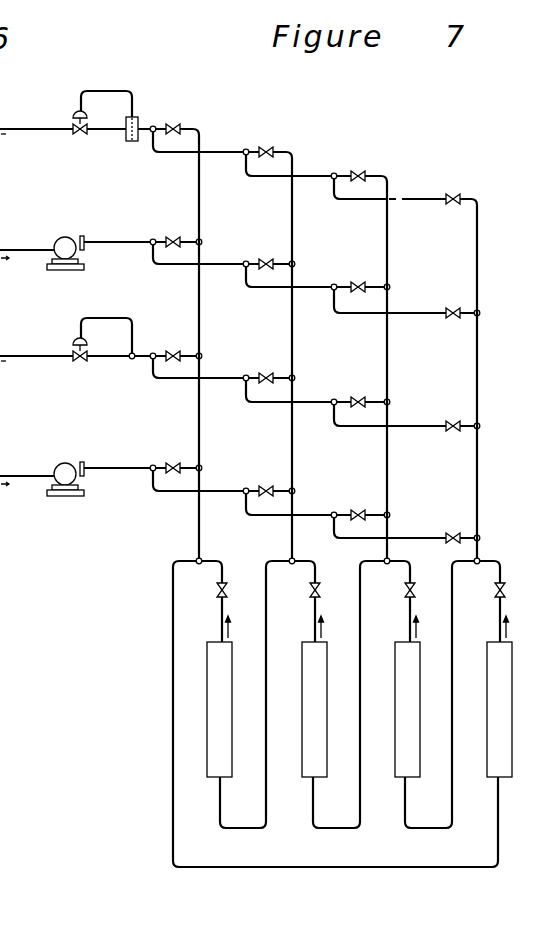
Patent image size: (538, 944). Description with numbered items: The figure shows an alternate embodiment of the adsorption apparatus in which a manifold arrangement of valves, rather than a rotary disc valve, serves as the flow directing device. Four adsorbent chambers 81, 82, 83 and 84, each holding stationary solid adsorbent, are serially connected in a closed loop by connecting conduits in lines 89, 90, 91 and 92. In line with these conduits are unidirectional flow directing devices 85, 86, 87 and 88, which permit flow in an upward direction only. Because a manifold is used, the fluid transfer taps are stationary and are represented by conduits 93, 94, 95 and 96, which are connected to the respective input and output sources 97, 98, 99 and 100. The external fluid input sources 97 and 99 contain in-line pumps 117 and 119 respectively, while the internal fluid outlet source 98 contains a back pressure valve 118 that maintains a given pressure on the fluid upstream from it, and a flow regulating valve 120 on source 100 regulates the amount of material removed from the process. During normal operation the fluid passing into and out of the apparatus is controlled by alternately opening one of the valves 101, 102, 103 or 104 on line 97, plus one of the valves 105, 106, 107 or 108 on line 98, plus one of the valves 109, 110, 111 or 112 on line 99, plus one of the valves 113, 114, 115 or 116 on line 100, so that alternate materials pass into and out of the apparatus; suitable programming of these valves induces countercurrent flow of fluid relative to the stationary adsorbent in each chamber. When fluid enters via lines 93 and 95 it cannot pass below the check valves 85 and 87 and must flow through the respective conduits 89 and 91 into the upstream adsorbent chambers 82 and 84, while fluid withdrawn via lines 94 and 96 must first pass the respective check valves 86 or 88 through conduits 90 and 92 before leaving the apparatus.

The output source line 100 is at (3, 131).
The input source line 99 is at (2, 254).
The outlet source line 98 is at (2, 358).
The input source line 97 is at (2, 470).
The fluid transfer tap conduit 96 is at (205, 141).
The fluid transfer tap conduit 95 is at (297, 163).
The fluid transfer tap conduit 94 is at (392, 190).
The fluid transfer tap conduit 93 is at (481, 229).
The flow regulating valve 120 is at (82, 137).
The in-line pump 119 is at (60, 271).
The back pressure valve 118 is at (83, 363).
The in-line pump 117 is at (60, 497).
The valve 116 is at (177, 125).
The valve 115 is at (270, 147).
The valve 114 is at (360, 172).
The valve 113 is at (456, 194).
The valve 112 is at (175, 237).
The valve 111 is at (268, 260).
The valve 110 is at (360, 282).
The valve 109 is at (460, 290).
The valve 108 is at (177, 351).
The valve 107 is at (265, 373).
The valve 106 is at (357, 398).
The valve 105 is at (452, 422).
The valve 104 is at (174, 462).
The valve 103 is at (267, 487).
The valve 102 is at (357, 511).
The valve 101 is at (452, 534).
The connecting conduit line 92 is at (218, 631).
The connecting conduit line 91 is at (312, 631).
The connecting conduit line 90 is at (407, 631).
The connecting conduit line 89 is at (497, 631).
The unidirectional flow directing device 88 is at (219, 586).
The unidirectional flow directing device 87 is at (312, 586).
The unidirectional flow directing device 86 is at (407, 586).
The unidirectional flow directing device 85 is at (497, 586).
The adsorbent chamber 84 is at (206, 774).
The adsorbent chamber 83 is at (301, 774).
The adsorbent chamber 82 is at (396, 774).
The adsorbent chamber 81 is at (488, 774).